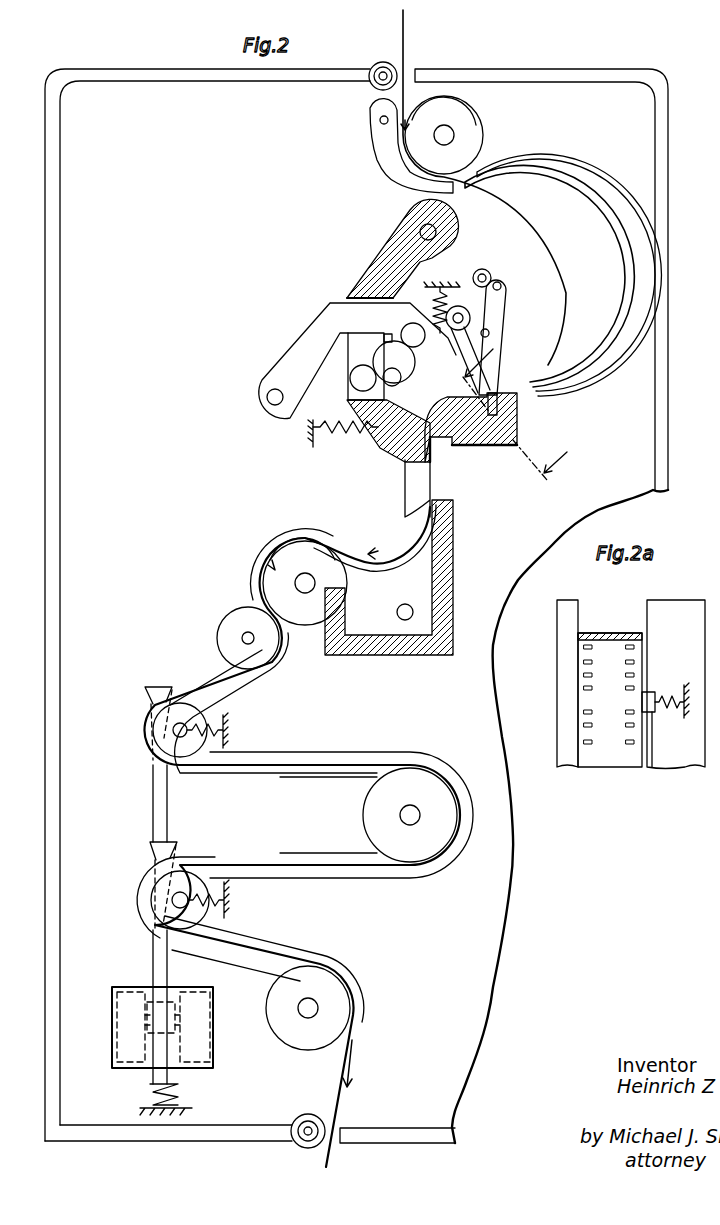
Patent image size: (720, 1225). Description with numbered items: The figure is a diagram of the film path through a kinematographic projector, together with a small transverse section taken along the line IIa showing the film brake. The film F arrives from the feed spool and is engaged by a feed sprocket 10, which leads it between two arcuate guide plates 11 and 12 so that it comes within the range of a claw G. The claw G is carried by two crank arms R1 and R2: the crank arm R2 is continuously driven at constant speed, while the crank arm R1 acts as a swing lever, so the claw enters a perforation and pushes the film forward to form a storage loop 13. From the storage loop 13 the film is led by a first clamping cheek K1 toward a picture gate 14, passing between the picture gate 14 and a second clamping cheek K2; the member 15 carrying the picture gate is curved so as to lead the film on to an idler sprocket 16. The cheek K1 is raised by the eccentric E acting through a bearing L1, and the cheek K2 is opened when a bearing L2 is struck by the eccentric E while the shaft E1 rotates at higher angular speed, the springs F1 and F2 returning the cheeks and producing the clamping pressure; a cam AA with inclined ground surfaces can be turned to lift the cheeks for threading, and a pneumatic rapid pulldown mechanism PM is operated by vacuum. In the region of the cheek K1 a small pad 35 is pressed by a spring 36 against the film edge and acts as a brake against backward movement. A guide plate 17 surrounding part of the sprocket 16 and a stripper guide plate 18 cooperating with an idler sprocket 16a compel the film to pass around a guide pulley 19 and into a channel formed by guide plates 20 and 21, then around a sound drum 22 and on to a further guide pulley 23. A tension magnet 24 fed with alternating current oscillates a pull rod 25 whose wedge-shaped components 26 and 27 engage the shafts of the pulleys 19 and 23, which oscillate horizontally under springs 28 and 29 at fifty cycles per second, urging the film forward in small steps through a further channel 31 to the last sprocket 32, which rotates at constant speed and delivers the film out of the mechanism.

In FIG. 2, the film F is at (406, 48).
In FIG. 2A, the film F is at (607, 633).
In FIG. 2, the feed sprocket 10 is at (480, 117).
In FIG. 2, the arcuate guide plate 11 is at (512, 173).
In FIG. 2, the arcuate guide plate 12 is at (500, 198).
In FIG. 2, the storage loop 13 is at (470, 445).
In FIG. 2, the picture gate 14 is at (433, 480).
In FIG. 2, the member carrying the picture gate 15 is at (454, 543).
In FIG. 2, the idler sprocket 16 is at (261, 580).
In FIG. 2, the idler sprocket 16a is at (232, 622).
In FIG. 2, the guide plate 17 is at (270, 540).
In FIG. 2, the guide plate 18 is at (257, 683).
In FIG. 2, the guide pulley 19 is at (192, 720).
In FIG. 2, the guide plate 20 is at (223, 670).
In FIG. 2, the guide plate 21 is at (341, 806).
In FIG. 2, the sound drum 22 is at (444, 833).
In FIG. 2, the guide pulley 23 is at (198, 907).
In FIG. 2, the tension magnet 24 is at (214, 1050).
In FIG. 2, the pull rod 25 is at (153, 970).
In FIG. 2, the wedge-shaped component 26 is at (146, 692).
In FIG. 2, the wedge-shaped component 27 is at (151, 858).
In FIG. 2, the spring 28 is at (226, 738).
In FIG. 2, the spring 29 is at (228, 897).
In FIG. 2, the channel 31 is at (278, 962).
In FIG. 2, the sprocket 32 is at (342, 1005).
In FIG. 2A, the pad 35 is at (652, 770).
In FIG. 2A, the spring 36 is at (673, 710).
In FIG. 2, the first clamping cheek K1 is at (321, 320).
In FIG. 2, the second clamping cheek K2 is at (405, 470).
In FIG. 2, the cam AA is at (385, 333).
In FIG. 2, the bearing L1 is at (421, 342).
In FIG. 2, the bearing L2 is at (351, 384).
In FIG. 2, the eccentric E is at (395, 385).
In FIG. 2, the shaft E1 is at (415, 366).
In FIG. 2, the spring F1 is at (432, 307).
In FIG. 2, the spring F2 is at (334, 445).
In FIG. 2, the crank arm R1 is at (463, 316).
In FIG. 2, the crank arm R2 is at (489, 272).
In FIG. 2, the claw G is at (497, 320).
In FIG. 2, the section line IIa is at (526, 409).
In FIG. 2, the stop lever A is at (514, 426).
In FIG. 2, the pneumatic rapid pulldown mechanism PM is at (410, 596).